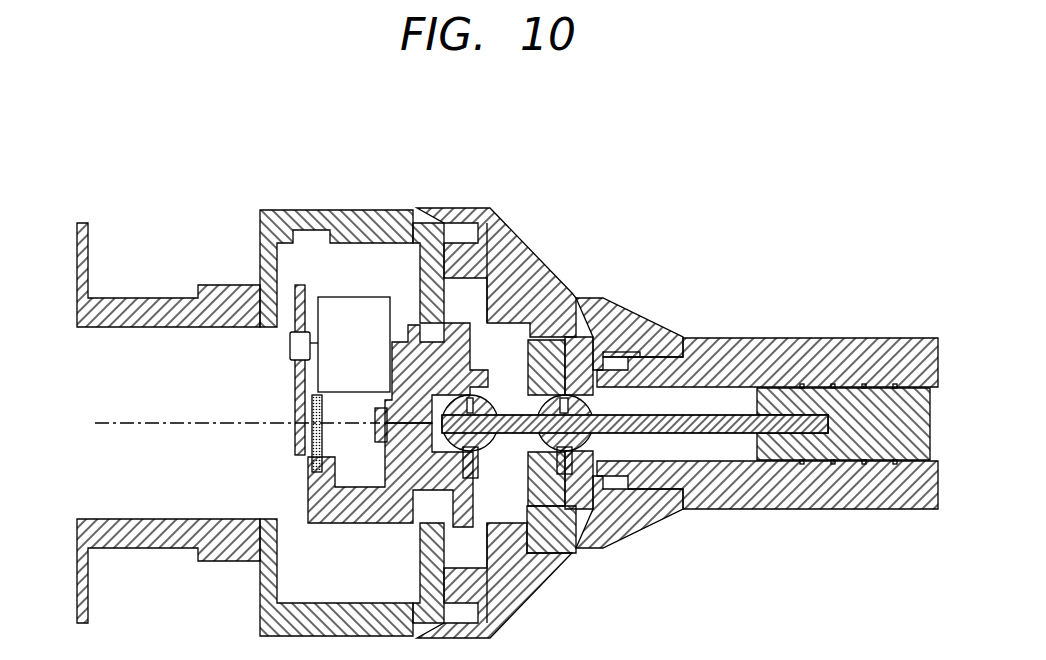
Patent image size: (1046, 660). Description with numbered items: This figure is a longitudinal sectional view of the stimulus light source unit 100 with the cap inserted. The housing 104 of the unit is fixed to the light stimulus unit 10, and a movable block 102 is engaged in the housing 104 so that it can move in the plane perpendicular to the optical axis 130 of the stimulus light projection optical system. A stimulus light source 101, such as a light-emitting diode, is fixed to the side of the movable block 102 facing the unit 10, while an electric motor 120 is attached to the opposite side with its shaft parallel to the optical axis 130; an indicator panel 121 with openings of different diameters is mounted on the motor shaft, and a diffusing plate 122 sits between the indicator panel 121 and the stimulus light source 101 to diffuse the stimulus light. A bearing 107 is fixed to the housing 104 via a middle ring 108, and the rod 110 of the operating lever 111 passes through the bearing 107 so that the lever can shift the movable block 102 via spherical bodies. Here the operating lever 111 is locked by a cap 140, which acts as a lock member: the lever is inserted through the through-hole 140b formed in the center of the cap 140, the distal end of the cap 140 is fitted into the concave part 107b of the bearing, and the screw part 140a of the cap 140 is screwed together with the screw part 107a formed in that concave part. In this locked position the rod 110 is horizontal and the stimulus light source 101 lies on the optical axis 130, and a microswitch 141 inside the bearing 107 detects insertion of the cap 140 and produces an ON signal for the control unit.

The stimulus light source unit 100 is at (283, 176).
The light stimulus unit 10 is at (103, 249).
The housing 104 is at (342, 227).
The middle ring 108 is at (447, 208).
The bearing 107 is at (568, 373).
The screw part 107a is at (628, 443).
The concave part 107b is at (613, 480).
The screw part 140a is at (602, 367).
The through-hole 140b is at (740, 447).
The microswitch 141 is at (632, 345).
The rod 110 is at (703, 410).
The cap 140 is at (780, 357).
The operating lever 111 is at (847, 400).
The electric motor 120 is at (335, 333).
The movable block 102 is at (395, 342).
The indicator panel 121 is at (293, 397).
The diffusing plate 122 is at (307, 462).
The optical axis 130 is at (143, 424).
The stimulus light source 101 is at (377, 425).